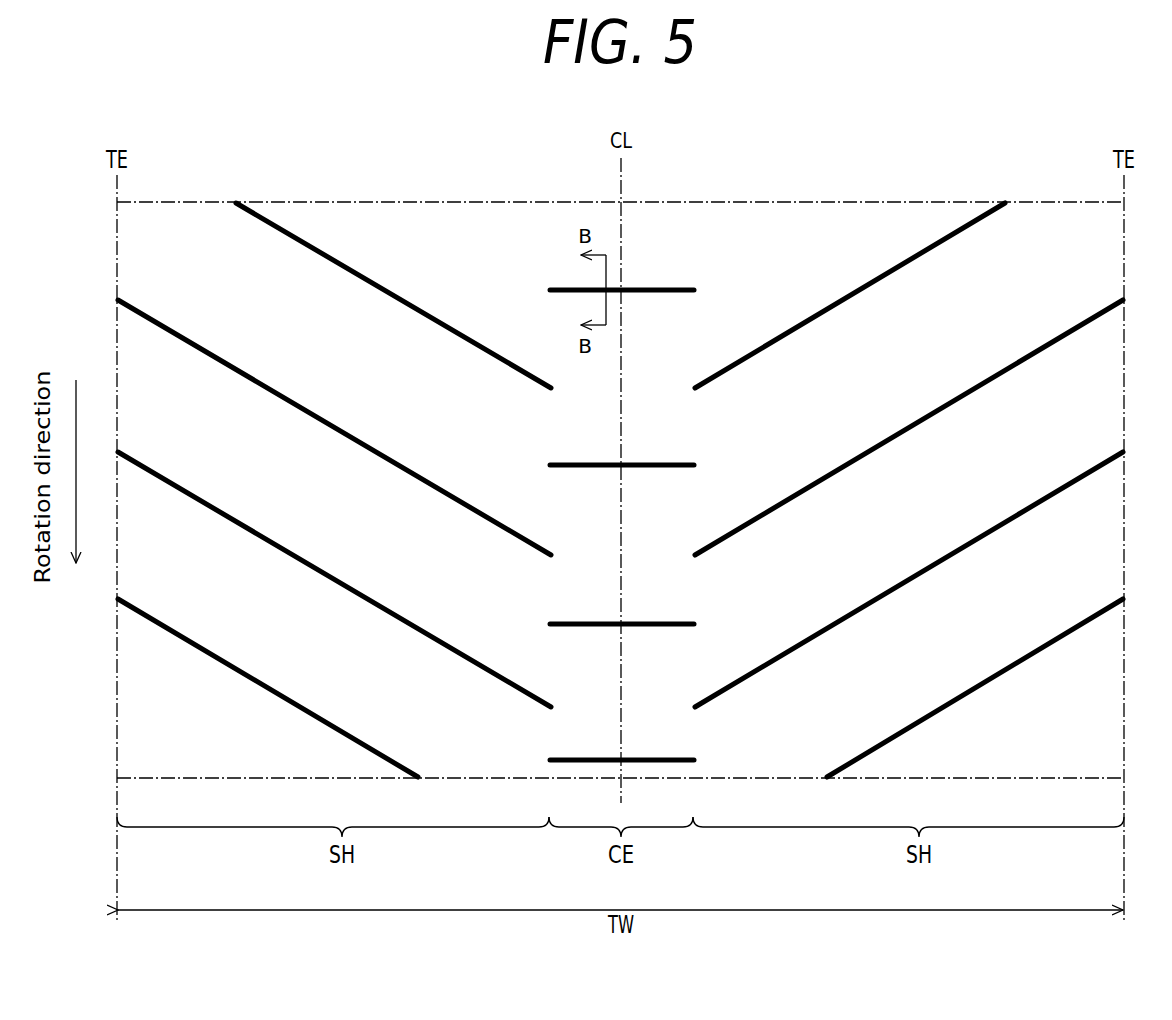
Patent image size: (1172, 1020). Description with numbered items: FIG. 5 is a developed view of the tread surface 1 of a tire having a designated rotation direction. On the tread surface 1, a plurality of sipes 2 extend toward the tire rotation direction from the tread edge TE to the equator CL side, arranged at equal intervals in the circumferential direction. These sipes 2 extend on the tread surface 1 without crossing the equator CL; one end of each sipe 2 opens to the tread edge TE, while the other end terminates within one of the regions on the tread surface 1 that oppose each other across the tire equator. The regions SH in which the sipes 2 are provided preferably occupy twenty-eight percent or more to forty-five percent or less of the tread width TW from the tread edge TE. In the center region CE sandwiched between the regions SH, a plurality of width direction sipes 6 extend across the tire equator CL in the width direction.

The tread surface 1 is at (1041, 148).
The sipes 2 is at (873, 276).
The width direction sipes 6 is at (662, 288).